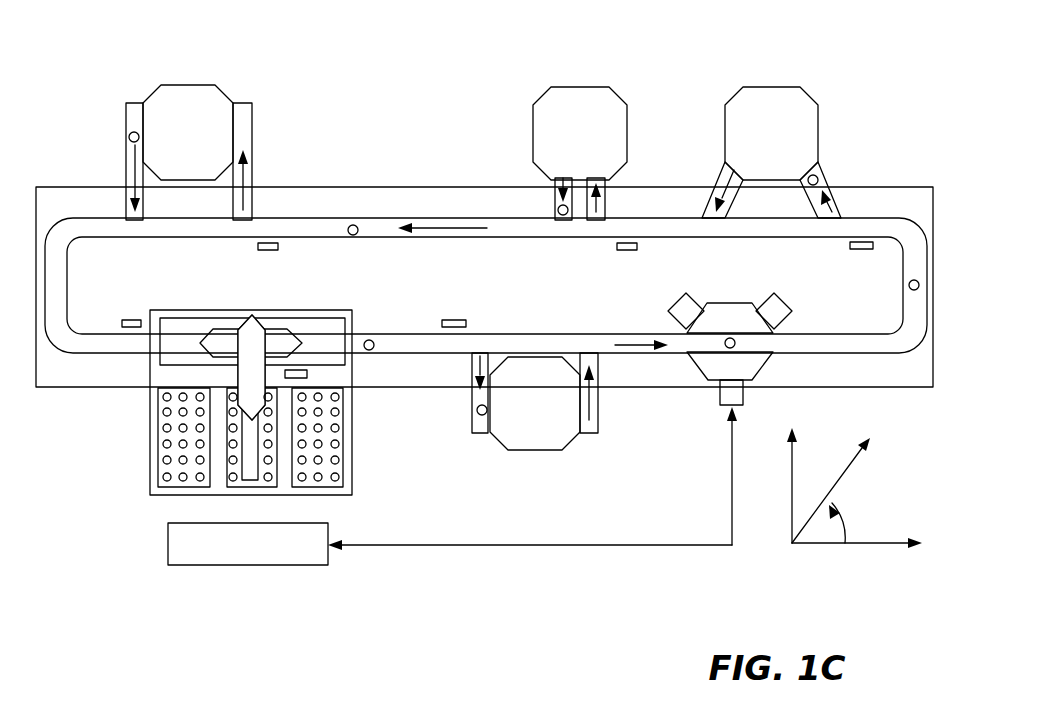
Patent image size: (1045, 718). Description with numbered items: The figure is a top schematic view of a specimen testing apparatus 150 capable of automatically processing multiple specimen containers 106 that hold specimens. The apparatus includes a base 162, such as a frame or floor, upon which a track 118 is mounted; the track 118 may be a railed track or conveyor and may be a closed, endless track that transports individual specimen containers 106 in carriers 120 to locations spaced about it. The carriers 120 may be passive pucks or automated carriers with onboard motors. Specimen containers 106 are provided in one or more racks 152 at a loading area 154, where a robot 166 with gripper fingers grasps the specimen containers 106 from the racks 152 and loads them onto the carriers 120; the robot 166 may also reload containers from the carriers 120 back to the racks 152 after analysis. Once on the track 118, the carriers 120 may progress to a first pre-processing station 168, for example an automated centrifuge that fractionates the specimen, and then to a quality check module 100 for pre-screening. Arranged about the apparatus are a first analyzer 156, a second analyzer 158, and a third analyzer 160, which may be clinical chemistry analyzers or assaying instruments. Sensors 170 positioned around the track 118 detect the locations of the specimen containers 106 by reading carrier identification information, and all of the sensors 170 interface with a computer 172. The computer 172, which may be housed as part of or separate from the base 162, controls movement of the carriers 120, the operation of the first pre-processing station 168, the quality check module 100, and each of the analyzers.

The specimen testing apparatus 150 is at (163, 47).
The base 162 is at (80, 187).
The track 118 is at (68, 284).
The third analyzer 160 is at (189, 152).
The second analyzer 158 is at (580, 153).
The first analyzer 156 is at (771, 152).
The first pre-processing station 168 is at (535, 401).
The carriers 120 is at (128, 137).
The sensors 170 is at (134, 318).
The loading area 154 is at (138, 472).
The robot 166 is at (180, 349).
The racks 152 is at (244, 423).
The specimen containers 106 is at (307, 479).
The computer 172 is at (168, 545).
The quality check module 100 is at (690, 385).